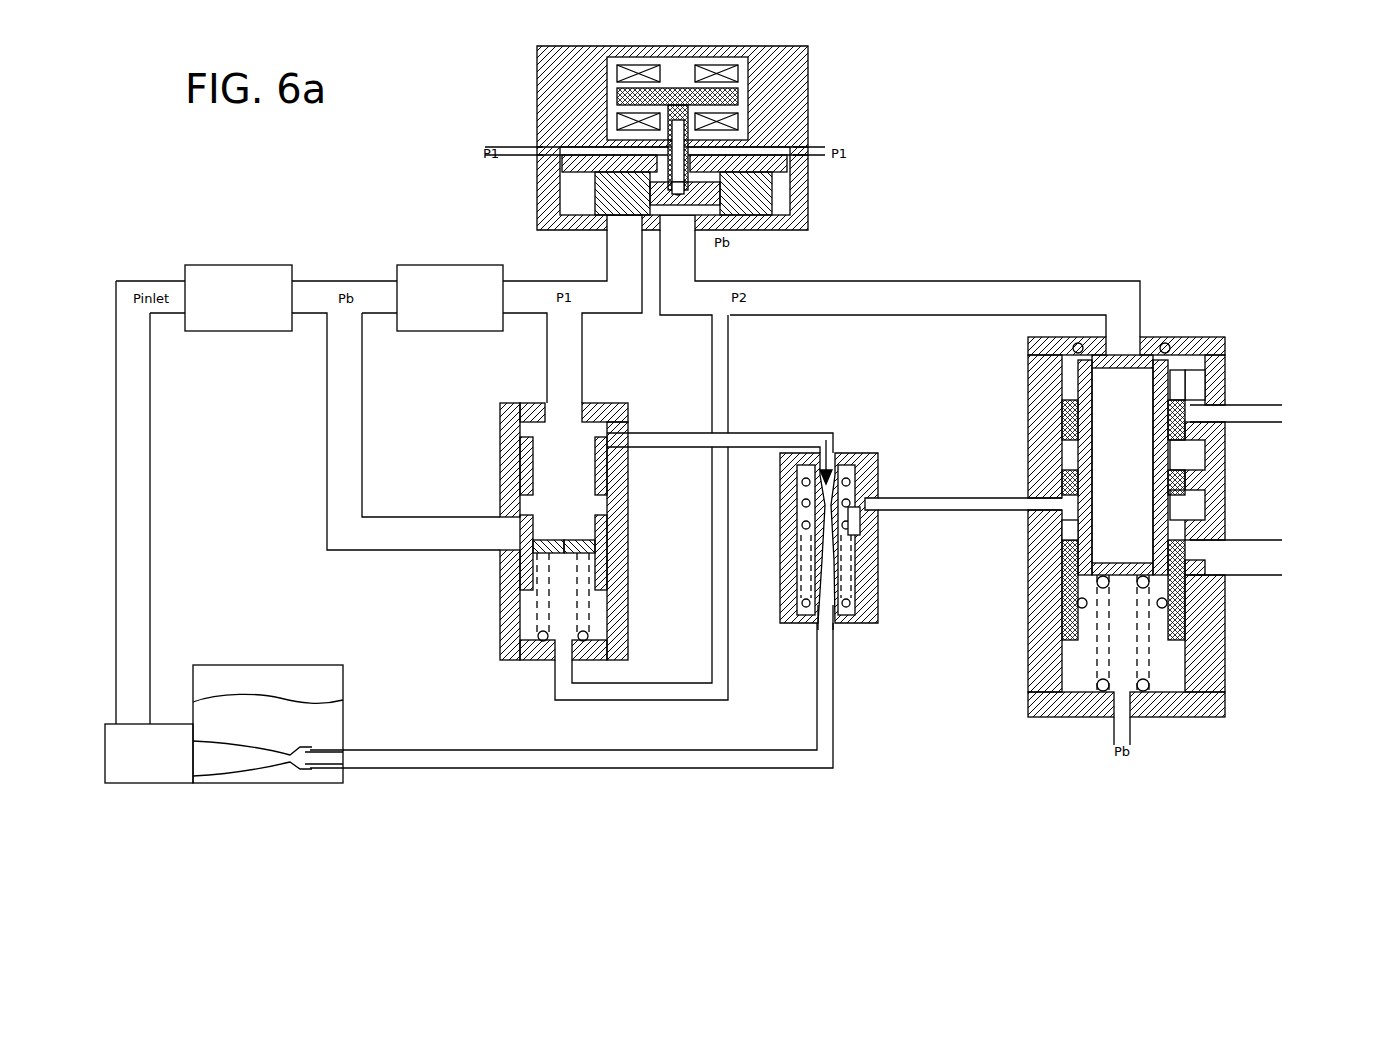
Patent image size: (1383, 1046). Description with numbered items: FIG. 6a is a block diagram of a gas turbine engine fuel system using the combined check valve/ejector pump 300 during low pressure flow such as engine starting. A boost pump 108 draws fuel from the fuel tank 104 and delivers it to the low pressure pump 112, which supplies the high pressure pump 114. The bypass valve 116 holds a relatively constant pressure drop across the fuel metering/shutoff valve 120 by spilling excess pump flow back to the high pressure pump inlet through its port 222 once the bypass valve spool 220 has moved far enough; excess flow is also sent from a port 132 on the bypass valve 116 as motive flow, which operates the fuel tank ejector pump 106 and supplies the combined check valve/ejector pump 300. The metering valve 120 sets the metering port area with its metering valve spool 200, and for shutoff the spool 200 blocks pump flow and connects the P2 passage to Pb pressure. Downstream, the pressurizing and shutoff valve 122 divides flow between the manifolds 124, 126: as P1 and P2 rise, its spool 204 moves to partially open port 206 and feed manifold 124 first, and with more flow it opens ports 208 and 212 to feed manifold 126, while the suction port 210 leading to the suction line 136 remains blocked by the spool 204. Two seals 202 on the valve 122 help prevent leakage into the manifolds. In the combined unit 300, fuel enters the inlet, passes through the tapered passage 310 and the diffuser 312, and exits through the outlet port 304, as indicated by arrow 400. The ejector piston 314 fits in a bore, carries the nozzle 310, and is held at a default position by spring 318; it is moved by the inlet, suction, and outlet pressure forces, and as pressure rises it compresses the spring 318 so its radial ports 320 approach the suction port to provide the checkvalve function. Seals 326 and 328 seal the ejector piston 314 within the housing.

The fuel tank 104 is at (305, 685).
The fuel tank ejector pump 106 is at (302, 737).
The boost pump 108 is at (128, 788).
The low pressure pump 112 is at (205, 258).
The high pressure pump 114 is at (417, 258).
The bypass valve 116 is at (554, 524).
The fuel metering/shutoff valve 120 is at (729, 138).
The pressurizing and shutoff valve 122 is at (1147, 489).
The manifold 124 is at (1258, 420).
The manifold 126 is at (1265, 550).
The port 132 is at (630, 440).
The suction line 136 is at (985, 498).
The metering valve spool 200 is at (772, 186).
The seals 202 is at (1158, 337).
The spool 204 is at (1090, 393).
The port 206 is at (1180, 378).
The port 208 is at (1178, 453).
The suction port 210 is at (1178, 503).
The port 212 is at (1192, 582).
The bypass valve spool 220 is at (522, 455).
The port 222 is at (610, 485).
The combined check valve/ejector pump 300 is at (848, 524).
The outlet port 304 is at (824, 640).
The tapered passage 310 is at (842, 476).
The diffuser 312 is at (842, 590).
The ejector piston 314 is at (806, 530).
The spring 318 is at (806, 602).
The radial ports 320 is at (806, 503).
The seal 326 is at (800, 478).
The seal 328 is at (862, 512).
The arrow 400 is at (832, 448).